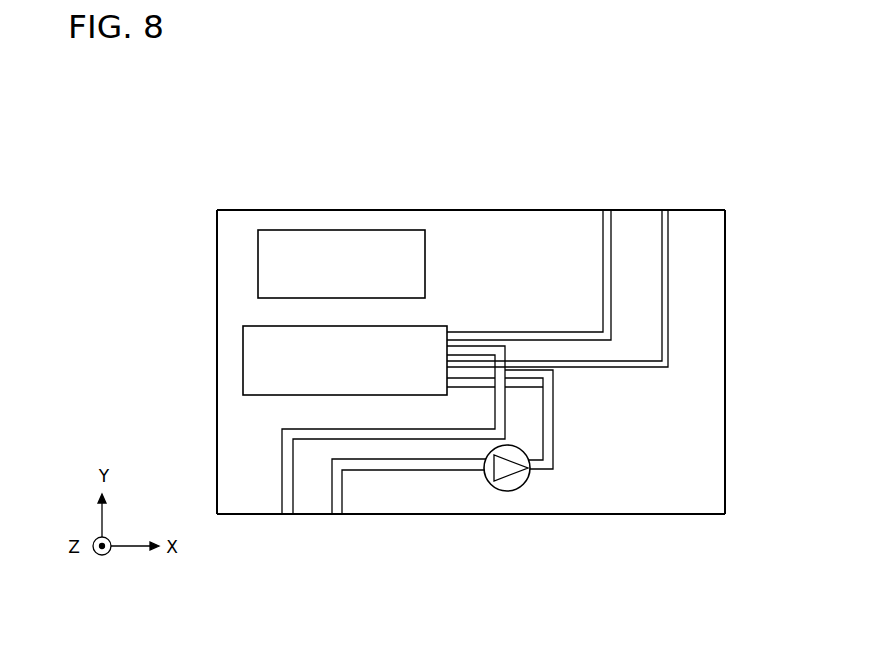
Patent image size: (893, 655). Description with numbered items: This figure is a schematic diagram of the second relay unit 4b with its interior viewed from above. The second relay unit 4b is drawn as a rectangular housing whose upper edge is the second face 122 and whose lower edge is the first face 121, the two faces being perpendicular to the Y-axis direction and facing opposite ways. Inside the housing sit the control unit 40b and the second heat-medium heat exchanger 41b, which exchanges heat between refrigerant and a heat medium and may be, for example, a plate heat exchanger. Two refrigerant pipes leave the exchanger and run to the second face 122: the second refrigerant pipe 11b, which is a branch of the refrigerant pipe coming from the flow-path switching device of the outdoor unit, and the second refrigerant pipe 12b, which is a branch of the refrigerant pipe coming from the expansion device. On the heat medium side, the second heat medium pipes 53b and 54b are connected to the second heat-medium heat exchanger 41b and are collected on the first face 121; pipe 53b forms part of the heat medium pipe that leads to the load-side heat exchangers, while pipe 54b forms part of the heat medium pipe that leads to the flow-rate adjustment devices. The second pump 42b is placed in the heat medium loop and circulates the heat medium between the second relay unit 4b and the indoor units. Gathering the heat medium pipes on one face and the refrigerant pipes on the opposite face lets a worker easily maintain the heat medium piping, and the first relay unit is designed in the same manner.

The second relay unit 4b is at (471, 366).
The second face 122 is at (478, 210).
The first face 121 is at (575, 514).
The control unit 40b is at (258, 264).
The second heat-medium heat exchanger 41b is at (243, 358).
The second pump 42b is at (503, 491).
The second refrigerant pipe 12b is at (606, 209).
The second refrigerant pipe 11b is at (663, 209).
The second heat medium pipe 53b is at (285, 516).
The second heat medium pipe 54b is at (337, 516).